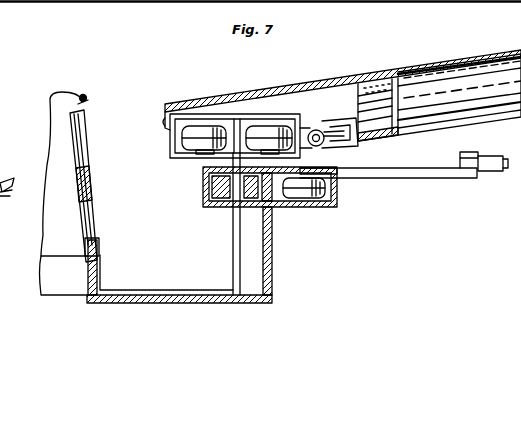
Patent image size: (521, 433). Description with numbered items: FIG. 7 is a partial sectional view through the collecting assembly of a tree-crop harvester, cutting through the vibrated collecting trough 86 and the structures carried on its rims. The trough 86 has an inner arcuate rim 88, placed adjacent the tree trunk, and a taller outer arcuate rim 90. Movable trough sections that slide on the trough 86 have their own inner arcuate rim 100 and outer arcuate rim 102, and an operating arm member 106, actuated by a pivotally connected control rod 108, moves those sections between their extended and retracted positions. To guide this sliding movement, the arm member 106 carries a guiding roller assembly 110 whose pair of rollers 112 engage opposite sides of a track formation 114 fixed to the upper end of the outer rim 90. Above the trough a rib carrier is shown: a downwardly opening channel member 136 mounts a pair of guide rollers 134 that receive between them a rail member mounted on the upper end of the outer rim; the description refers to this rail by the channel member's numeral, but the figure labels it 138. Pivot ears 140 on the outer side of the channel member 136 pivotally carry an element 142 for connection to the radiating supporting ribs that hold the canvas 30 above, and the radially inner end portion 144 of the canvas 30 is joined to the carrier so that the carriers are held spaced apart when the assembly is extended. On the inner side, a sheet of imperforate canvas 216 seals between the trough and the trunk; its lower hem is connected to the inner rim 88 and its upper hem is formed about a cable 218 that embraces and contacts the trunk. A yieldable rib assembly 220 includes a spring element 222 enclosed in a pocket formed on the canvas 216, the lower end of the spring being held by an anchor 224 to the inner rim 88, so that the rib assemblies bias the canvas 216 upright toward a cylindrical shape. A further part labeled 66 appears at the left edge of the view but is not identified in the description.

The canvas 30 is at (374, 80).
The support member 66 is at (10, 234).
The collecting trough 86 is at (254, 306).
The inner arcuate rim 88 is at (85, 276).
The outer arcuate rim 90 is at (274, 272).
The inner arcuate rim 100 is at (101, 281).
The outer arcuate rim 102 is at (232, 226).
The operating arm member 106 is at (408, 179).
The control rod 108 is at (492, 172).
The guiding roller assembly 110 is at (340, 203).
The rollers 112 is at (304, 201).
The track formation 114 is at (272, 205).
The guide rollers 134 is at (206, 134).
The channel member 136 is at (254, 118).
The drive shaft 138 is at (228, 122).
The pivot ears 140 is at (313, 130).
The element 142 is at (326, 148).
The radially inner end portions 144 is at (170, 122).
The canvas sheet 216 is at (90, 130).
The cable 218 is at (82, 95).
The yieldable rib assemblies 220 is at (62, 146).
The spring element 222 is at (92, 186).
The anchor 224 is at (85, 262).